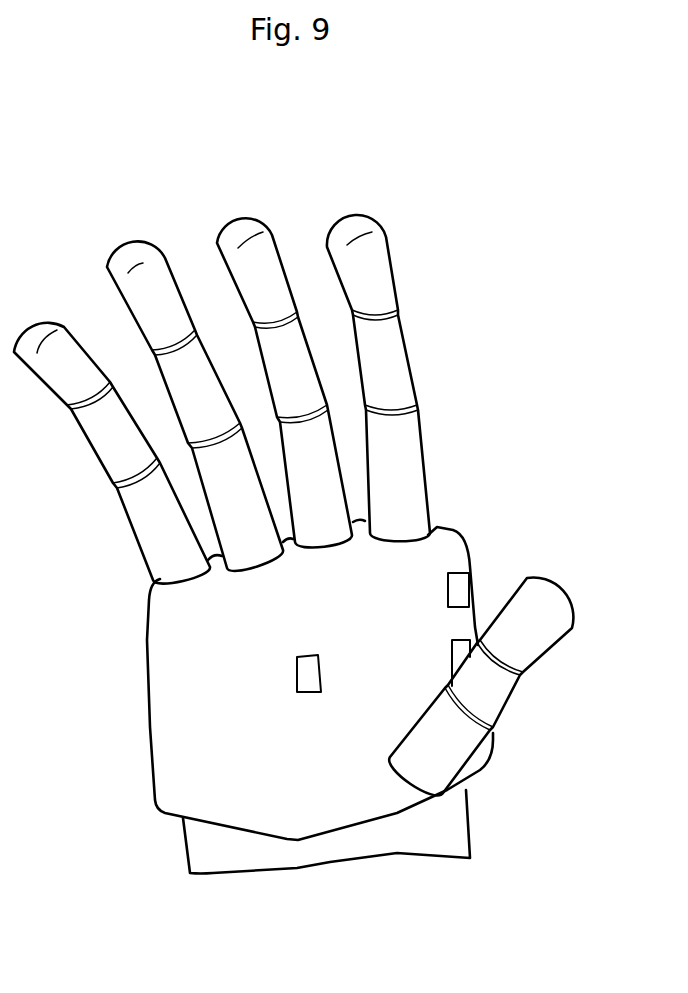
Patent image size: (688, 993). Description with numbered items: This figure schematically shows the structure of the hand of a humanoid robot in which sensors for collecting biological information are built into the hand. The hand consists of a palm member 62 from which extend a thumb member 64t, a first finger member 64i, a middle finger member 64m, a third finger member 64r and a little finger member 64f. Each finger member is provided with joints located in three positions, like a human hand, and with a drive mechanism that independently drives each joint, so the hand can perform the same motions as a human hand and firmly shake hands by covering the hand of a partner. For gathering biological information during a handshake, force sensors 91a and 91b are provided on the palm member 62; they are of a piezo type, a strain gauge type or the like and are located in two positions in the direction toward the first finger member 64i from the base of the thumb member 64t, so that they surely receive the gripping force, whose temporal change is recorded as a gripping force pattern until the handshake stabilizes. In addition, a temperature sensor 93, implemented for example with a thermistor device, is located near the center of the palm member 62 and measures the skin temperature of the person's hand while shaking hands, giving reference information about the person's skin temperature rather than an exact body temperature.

The palm member 62 is at (360, 790).
The little finger member 64f is at (65, 355).
The third finger member 64r is at (143, 260).
The middle finger member 64m is at (253, 213).
The first finger member 64i is at (380, 250).
The thumb member 64t is at (557, 587).
The force sensor 91a is at (455, 590).
The force sensor 91b is at (458, 655).
The temperature sensor 93 is at (300, 673).